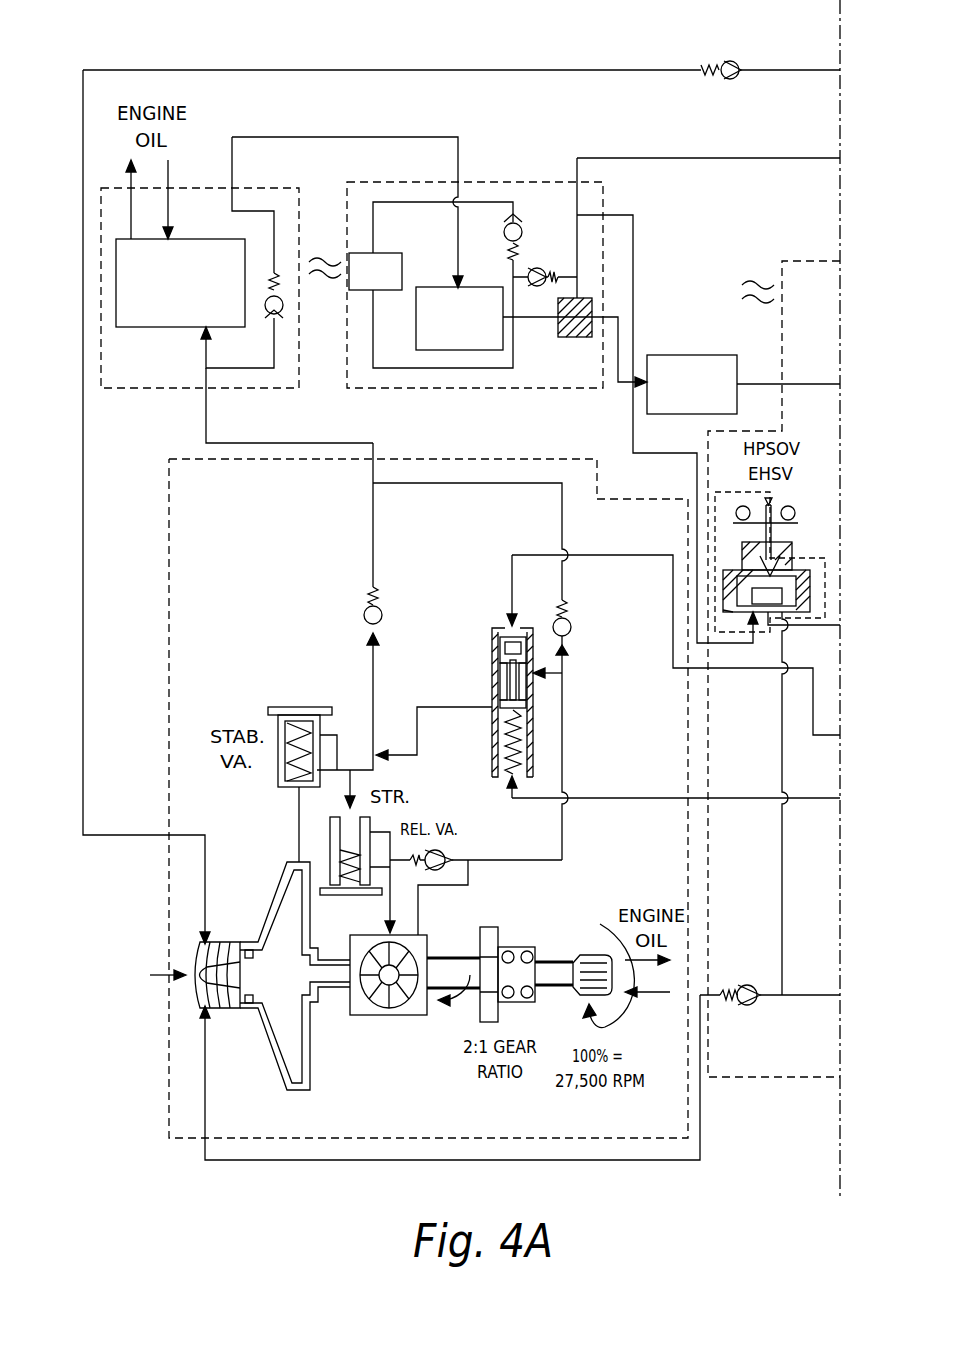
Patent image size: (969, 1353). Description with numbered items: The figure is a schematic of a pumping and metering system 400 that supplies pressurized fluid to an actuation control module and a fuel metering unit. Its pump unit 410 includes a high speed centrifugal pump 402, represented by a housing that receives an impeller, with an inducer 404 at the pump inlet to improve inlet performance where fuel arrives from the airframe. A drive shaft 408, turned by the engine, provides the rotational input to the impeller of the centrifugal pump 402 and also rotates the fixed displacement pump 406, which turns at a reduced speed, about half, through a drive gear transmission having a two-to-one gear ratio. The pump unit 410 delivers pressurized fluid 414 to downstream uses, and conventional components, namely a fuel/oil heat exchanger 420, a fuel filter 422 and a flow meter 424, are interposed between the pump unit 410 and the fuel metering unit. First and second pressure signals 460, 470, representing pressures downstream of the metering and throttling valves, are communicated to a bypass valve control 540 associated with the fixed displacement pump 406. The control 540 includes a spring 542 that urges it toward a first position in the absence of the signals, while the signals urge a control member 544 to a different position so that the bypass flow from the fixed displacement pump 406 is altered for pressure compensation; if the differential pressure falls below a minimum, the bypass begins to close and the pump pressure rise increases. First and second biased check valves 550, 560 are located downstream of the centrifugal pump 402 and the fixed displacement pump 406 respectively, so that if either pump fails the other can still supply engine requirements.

The pumping and metering system 400 is at (186, 1155).
The high speed centrifugal pump 402 is at (310, 1038).
The inducer 404 is at (226, 940).
The fixed displacement pump 406 is at (374, 935).
The drive shaft 408 is at (548, 975).
The pump unit 410 is at (168, 684).
The pressurized fluid 414 is at (316, 459).
The fuel/oil heat exchanger 420 is at (253, 188).
The fuel filter 422 is at (518, 182).
The flow meter 424 is at (692, 354).
The first pressure signal 460 is at (600, 555).
The second pressure signal 470 is at (608, 800).
The bypass valve control 540 is at (533, 717).
The spring 542 is at (520, 752).
The control member 544 is at (491, 630).
The first biased check valve 550 is at (363, 613).
The second biased check valve 560 is at (573, 628).